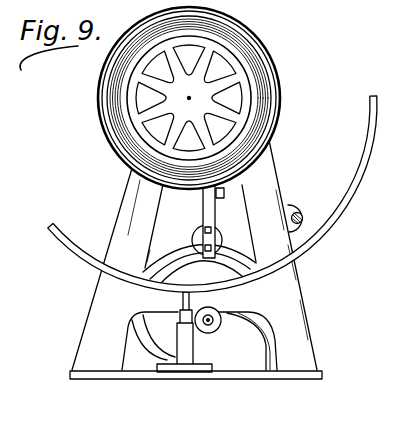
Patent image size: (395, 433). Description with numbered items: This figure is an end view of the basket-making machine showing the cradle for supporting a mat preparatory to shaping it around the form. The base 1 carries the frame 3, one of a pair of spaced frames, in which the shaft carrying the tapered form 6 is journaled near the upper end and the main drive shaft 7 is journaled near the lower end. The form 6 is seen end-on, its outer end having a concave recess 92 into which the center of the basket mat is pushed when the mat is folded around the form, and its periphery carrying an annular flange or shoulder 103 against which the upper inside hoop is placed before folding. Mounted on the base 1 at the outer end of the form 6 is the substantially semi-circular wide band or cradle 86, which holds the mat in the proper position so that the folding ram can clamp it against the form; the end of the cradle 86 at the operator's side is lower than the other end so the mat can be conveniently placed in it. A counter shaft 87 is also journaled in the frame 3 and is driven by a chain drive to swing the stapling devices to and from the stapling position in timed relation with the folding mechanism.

The base 1 is at (76, 376).
The frame 3 is at (90, 310).
The tapered form 6 is at (158, 98).
The main drive shaft 7 is at (213, 326).
The cradle 86 is at (75, 212).
The counter shaft 87 is at (305, 212).
The concave recess 92 is at (178, 98).
The annular flange or shoulder 103 is at (98, 71).